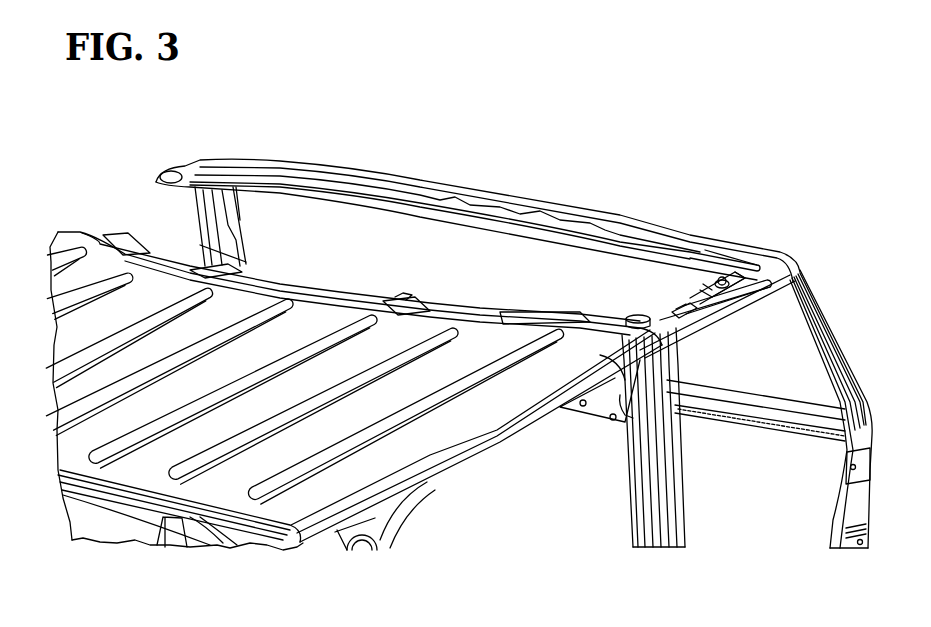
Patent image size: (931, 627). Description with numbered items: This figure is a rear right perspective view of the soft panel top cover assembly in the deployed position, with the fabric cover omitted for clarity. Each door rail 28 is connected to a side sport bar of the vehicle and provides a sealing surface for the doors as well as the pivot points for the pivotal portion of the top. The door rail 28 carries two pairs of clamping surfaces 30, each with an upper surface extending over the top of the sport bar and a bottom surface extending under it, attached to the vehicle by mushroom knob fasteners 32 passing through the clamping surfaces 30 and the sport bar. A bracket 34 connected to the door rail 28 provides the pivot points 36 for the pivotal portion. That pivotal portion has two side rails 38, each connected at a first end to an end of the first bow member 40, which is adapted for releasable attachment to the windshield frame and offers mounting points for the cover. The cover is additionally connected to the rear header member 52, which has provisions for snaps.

The door rail 28 is at (750, 307).
The clamping surfaces 30 is at (712, 285).
The mushroom knob fastener 32 is at (720, 276).
The bracket 34 is at (638, 314).
The pivot points 36 is at (677, 310).
The side rail 38 is at (717, 280).
The first bow member 40 is at (727, 247).
The rear header member 52 is at (404, 294).